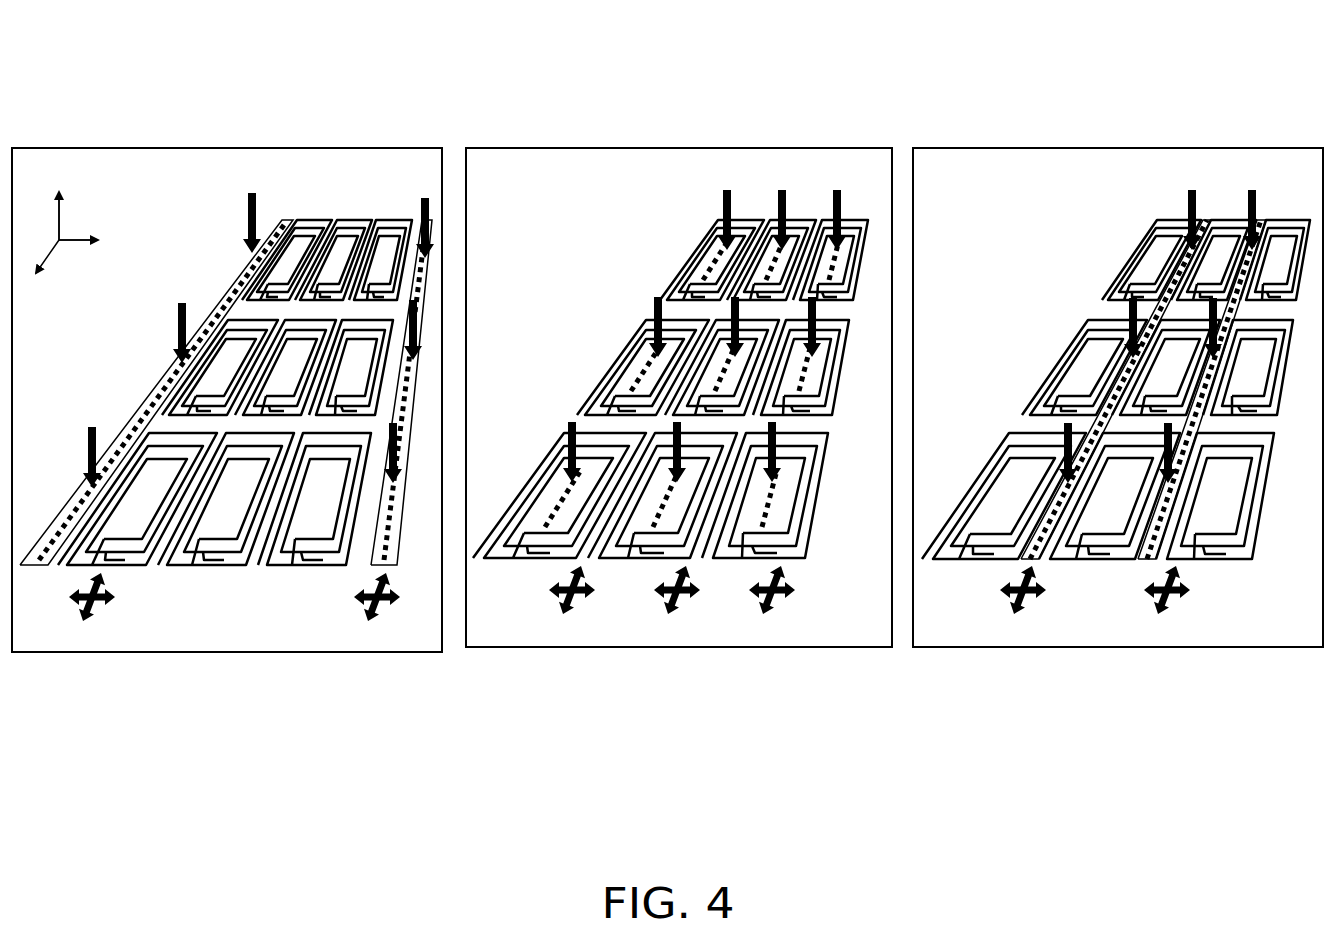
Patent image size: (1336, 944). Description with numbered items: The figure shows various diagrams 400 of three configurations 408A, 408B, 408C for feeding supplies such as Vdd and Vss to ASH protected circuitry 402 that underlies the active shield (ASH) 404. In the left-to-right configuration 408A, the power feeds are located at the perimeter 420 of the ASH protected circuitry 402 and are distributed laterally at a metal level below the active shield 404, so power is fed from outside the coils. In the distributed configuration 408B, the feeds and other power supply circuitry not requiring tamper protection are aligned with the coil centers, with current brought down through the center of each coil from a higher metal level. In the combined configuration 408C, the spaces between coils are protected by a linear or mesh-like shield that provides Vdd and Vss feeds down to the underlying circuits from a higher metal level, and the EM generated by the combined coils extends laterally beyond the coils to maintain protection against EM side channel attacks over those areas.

The diagrams 400 is at (667, 424).
The ASH protected circuitry 402 is at (667, 439).
The active shield (ASH) 404 is at (346, 210).
The left-to-right configuration 408A is at (234, 442).
The distributed configuration 408B is at (679, 468).
The combined configuration 408C is at (1118, 468).
The perimeter 420 is at (152, 395).